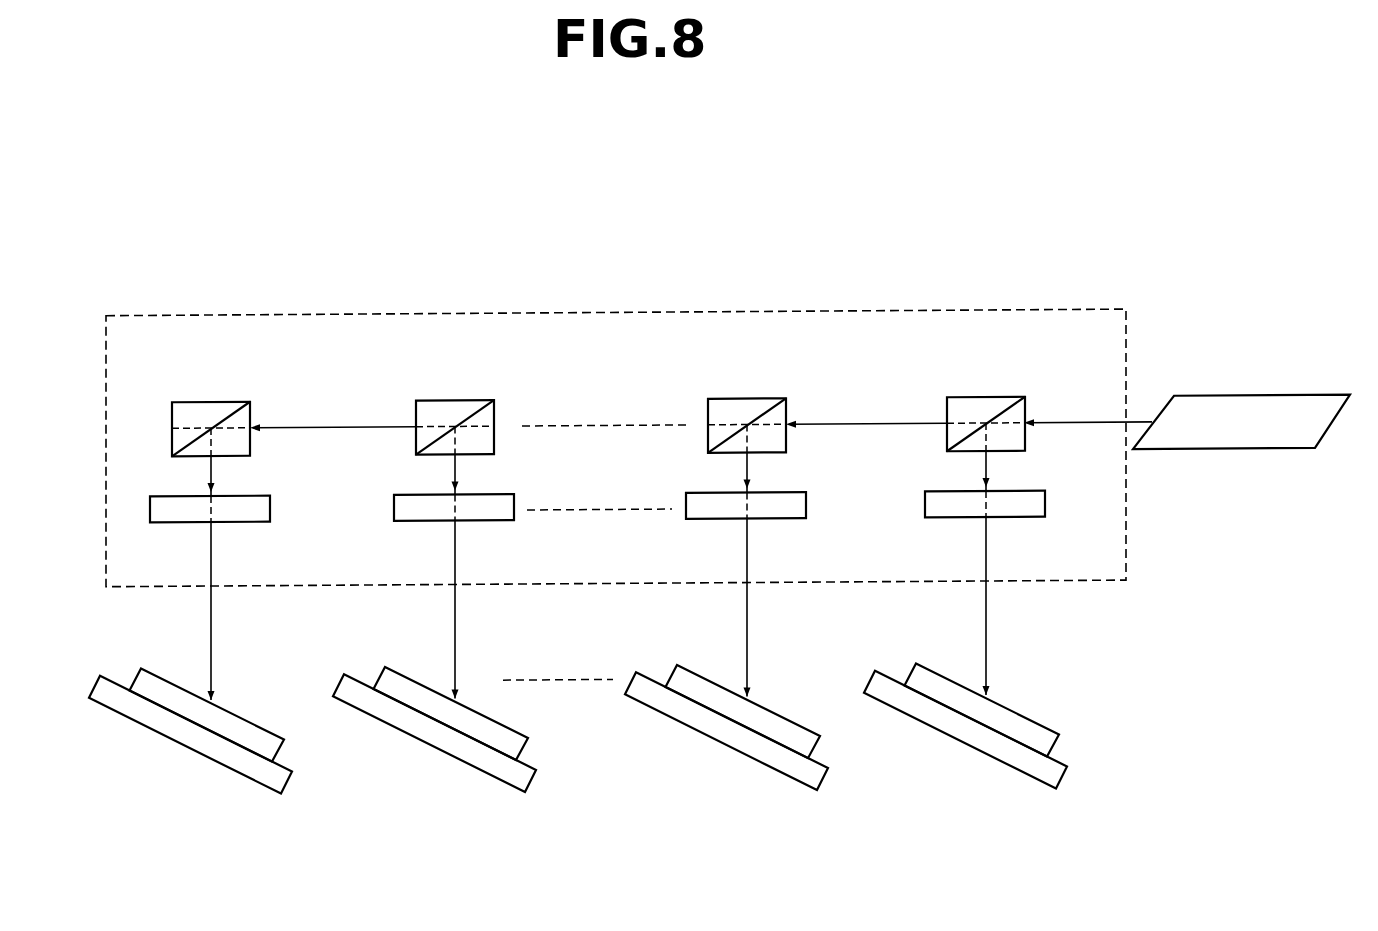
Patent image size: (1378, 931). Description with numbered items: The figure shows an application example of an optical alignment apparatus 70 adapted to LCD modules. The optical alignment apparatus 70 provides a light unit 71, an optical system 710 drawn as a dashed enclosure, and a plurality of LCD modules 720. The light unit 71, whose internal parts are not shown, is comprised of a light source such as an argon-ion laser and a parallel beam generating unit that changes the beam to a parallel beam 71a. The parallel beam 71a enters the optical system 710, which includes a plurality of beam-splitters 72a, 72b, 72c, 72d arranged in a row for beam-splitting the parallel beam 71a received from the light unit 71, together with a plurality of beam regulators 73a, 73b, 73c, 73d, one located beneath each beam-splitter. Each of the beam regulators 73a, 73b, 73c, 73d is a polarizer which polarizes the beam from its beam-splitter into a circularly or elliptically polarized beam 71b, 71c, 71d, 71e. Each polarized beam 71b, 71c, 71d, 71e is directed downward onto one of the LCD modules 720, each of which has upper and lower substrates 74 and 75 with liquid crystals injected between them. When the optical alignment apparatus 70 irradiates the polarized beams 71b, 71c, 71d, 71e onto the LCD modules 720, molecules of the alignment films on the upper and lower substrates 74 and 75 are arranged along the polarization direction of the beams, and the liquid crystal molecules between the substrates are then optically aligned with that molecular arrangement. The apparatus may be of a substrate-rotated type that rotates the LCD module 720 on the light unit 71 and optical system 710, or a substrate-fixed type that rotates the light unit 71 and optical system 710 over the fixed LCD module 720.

The optical alignment apparatus 70 is at (629, 278).
The optical system 710 is at (961, 316).
The light unit 71 is at (1250, 407).
The parallel beam 71a is at (1061, 425).
The polarized beam 71b is at (212, 607).
The polarized beam 71c is at (495, 609).
The polarized beam 71d is at (789, 607).
The polarized beam 71e is at (1027, 605).
The beam-splitter 72a is at (209, 401).
The beam-splitter 72b is at (455, 399).
The beam-splitter 72c is at (747, 397).
The beam-splitter 72d is at (986, 396).
The beam regulator 73a is at (270, 505).
The beam regulator 73b is at (491, 501).
The beam regulator 73c is at (785, 505).
The beam regulator 73d is at (1024, 503).
The upper substrate 74 is at (277, 750).
The lower substrate 75 is at (287, 784).
The LCD module 720 is at (650, 746).